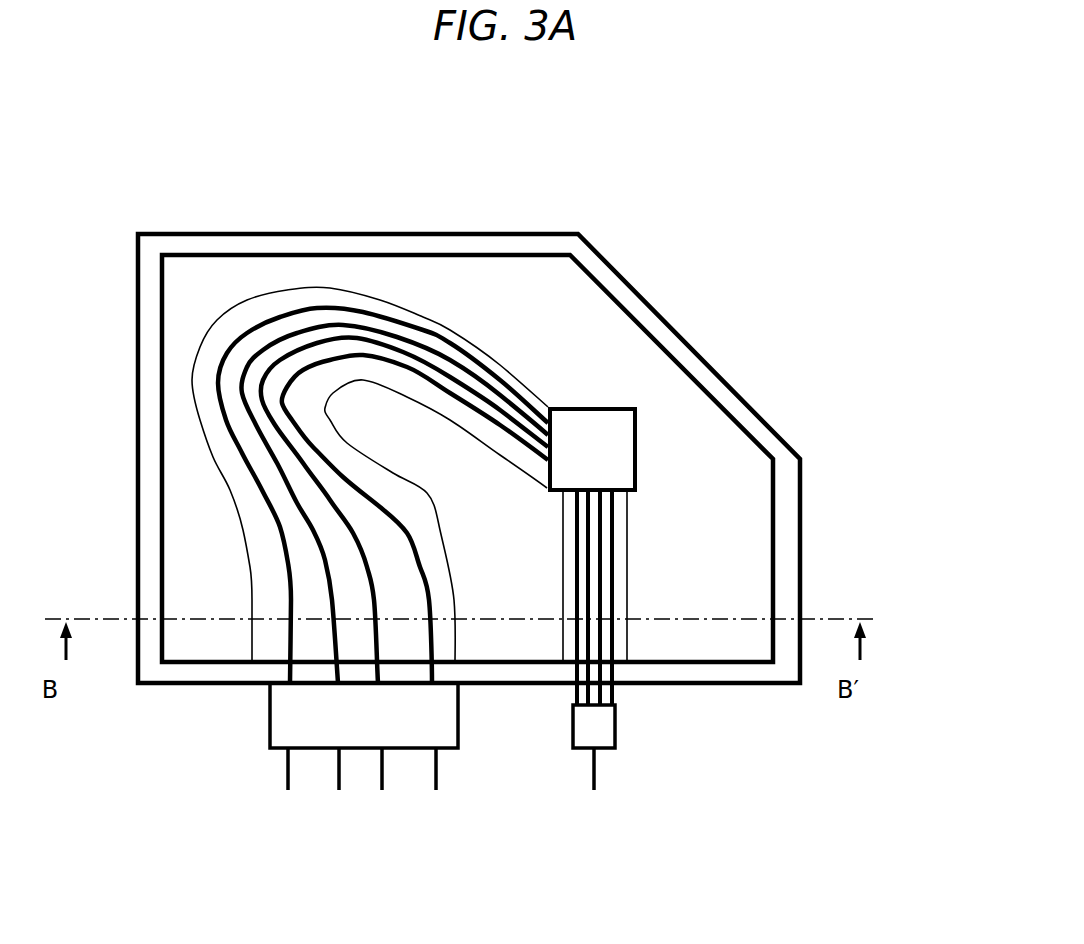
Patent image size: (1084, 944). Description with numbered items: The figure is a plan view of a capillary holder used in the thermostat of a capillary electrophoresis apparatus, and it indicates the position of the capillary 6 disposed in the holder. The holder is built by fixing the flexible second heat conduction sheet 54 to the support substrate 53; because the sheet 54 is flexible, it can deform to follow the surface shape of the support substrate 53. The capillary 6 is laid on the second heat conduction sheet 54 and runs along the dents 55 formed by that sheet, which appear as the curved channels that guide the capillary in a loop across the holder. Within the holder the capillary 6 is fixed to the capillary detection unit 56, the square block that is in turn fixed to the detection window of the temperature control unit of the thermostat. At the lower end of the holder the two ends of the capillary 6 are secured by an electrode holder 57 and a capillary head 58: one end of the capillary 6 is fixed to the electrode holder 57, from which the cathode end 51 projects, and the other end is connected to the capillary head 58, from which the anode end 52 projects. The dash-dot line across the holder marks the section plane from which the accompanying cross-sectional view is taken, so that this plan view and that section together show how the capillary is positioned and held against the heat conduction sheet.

The capillary 6 is at (258, 487).
The cathode end 51 is at (289, 789).
The anode end 52 is at (595, 790).
The support substrate 53 is at (665, 320).
The second heat conduction sheet 54 is at (545, 257).
The dents 55 is at (288, 292).
The capillary detection unit 56 is at (640, 453).
The electrode holder 57 is at (268, 713).
The capillary head 58 is at (617, 728).